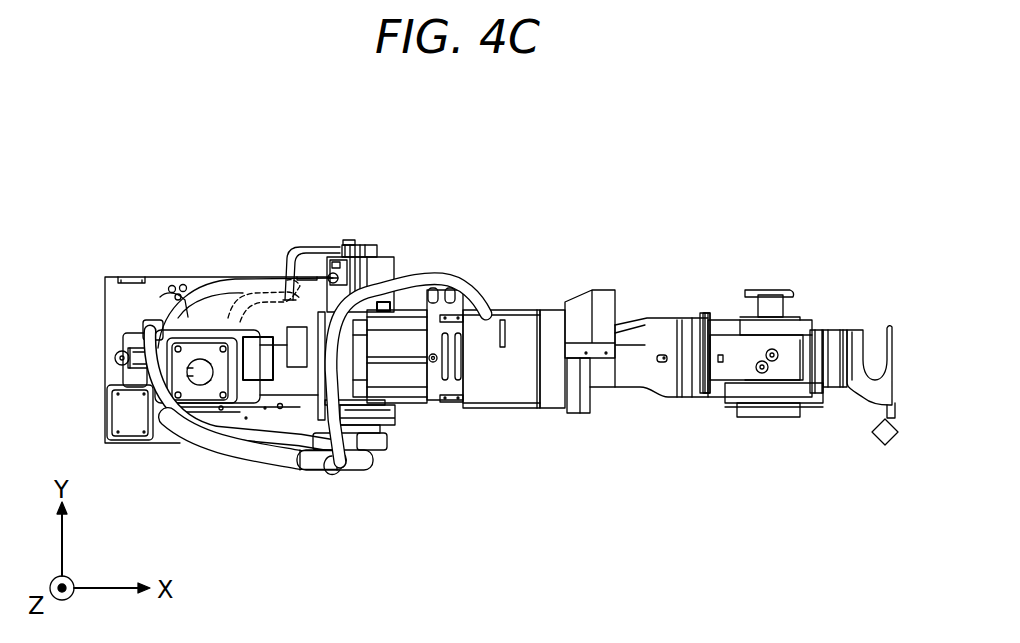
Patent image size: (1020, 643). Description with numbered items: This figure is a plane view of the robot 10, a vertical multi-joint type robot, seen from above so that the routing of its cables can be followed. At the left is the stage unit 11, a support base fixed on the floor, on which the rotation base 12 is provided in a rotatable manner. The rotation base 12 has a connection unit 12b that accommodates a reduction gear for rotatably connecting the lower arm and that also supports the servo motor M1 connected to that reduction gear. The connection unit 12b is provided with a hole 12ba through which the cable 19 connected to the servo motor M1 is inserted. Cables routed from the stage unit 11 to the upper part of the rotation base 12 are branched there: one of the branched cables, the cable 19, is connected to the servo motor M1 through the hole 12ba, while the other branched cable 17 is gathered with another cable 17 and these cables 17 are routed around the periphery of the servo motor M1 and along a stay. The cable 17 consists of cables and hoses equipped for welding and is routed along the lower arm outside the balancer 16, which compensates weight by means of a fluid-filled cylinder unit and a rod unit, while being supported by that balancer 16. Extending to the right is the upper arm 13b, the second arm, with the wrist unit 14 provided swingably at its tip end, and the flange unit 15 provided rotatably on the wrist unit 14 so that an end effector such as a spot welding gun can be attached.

The robot 10 is at (156, 150).
The stage unit 11 is at (165, 275).
The rotation base 12 is at (220, 437).
The connection unit 12b is at (228, 293).
The hole 12ba is at (268, 268).
The upper arm 13b is at (613, 373).
The wrist unit 14 is at (815, 392).
The flange unit 15 is at (868, 392).
The balancer 16 is at (399, 434).
The cable 17 is at (255, 457).
The cable 19 is at (294, 248).
The servo motor M1 is at (383, 248).